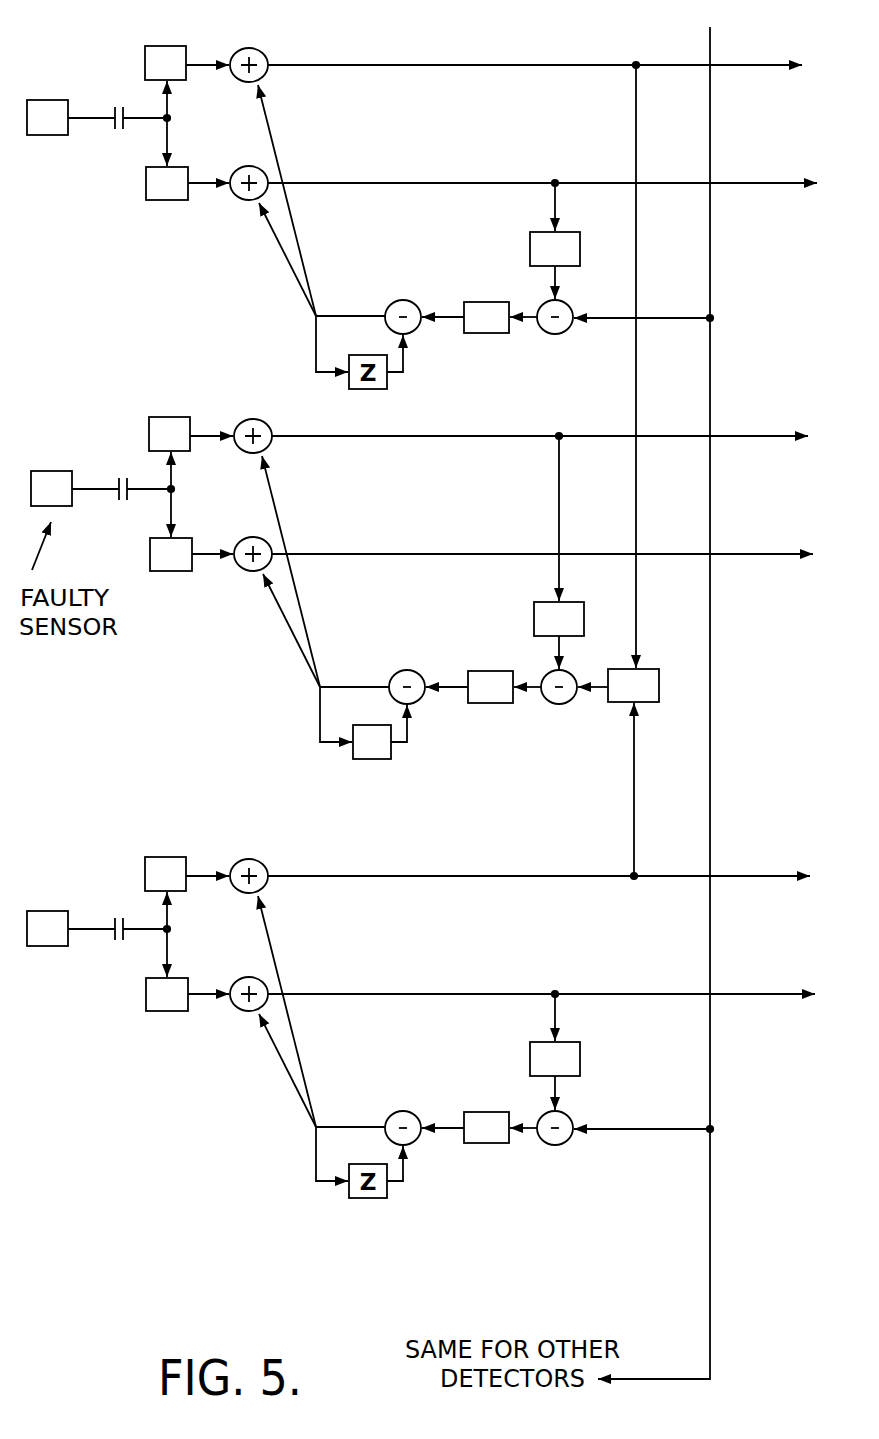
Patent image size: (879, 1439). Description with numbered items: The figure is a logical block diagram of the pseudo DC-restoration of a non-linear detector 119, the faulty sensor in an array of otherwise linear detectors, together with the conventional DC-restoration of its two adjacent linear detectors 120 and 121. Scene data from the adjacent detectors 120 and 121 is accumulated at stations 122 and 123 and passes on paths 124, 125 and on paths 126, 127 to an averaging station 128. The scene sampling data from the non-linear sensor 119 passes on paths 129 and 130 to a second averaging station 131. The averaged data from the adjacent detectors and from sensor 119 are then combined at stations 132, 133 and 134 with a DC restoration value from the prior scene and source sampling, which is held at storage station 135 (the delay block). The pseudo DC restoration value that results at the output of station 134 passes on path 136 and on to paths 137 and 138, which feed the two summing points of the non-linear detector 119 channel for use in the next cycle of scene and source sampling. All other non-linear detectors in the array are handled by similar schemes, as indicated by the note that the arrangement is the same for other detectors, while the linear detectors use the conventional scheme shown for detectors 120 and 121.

The non-linear detector 119 is at (51, 471).
The adjacent linear detector 120 is at (45, 135).
The adjacent linear detector 121 is at (47, 911).
The accumulation station 122 is at (150, 46).
The accumulation station 123 is at (165, 857).
The path 124 is at (395, 68).
The path 125 is at (452, 876).
The path 126 is at (637, 281).
The path 127 is at (634, 820).
The averaging station 128 is at (659, 670).
The path 129 is at (453, 436).
The path 130 is at (559, 483).
The averaging station 131 is at (534, 613).
The combining station 132 is at (560, 704).
The combining station 133 is at (489, 703).
The combining station 134 is at (412, 668).
The storage station 135 is at (370, 760).
The path 136 is at (348, 686).
The path 137 is at (304, 618).
The path 138 is at (282, 610).